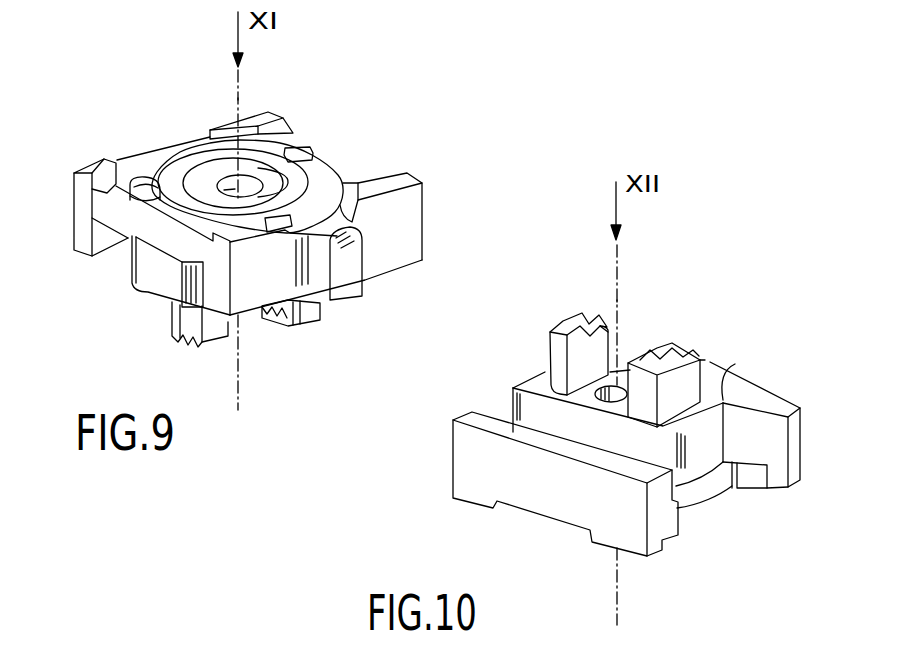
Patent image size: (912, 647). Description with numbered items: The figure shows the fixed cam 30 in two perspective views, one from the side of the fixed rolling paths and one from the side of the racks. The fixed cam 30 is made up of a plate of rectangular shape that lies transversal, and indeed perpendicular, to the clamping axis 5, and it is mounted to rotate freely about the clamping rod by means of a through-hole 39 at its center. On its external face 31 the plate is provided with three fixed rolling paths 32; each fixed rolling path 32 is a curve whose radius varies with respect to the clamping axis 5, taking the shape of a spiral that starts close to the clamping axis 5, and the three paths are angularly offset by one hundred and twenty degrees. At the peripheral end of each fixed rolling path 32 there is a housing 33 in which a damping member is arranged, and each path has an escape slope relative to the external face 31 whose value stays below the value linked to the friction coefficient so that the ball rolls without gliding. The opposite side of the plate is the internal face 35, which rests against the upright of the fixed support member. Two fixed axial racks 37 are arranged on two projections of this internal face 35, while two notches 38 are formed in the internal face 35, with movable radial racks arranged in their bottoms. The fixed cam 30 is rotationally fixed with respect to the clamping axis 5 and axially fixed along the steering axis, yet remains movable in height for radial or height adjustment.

In FIG. 9, the clamping axis 5 is at (237, 96).
In FIG. 10, the clamping axis 5 is at (620, 302).
In FIG. 9, the fixed cam 30 is at (130, 118).
In FIG. 10, the fixed cam 30 is at (745, 328).
In FIG. 9, the external face 31 is at (328, 167).
In FIG. 9, the fixed rolling path 32 is at (213, 153).
In FIG. 9, the housing 33 is at (300, 150).
In FIG. 9, the internal face 35 is at (391, 268).
In FIG. 10, the internal face 35 is at (773, 405).
In FIG. 9, the fixed axial rack 37 is at (190, 345).
In FIG. 10, the fixed axial rack 37 is at (575, 317).
In FIG. 10, the notch 38 is at (750, 451).
In FIG. 9, the through-hole 39 is at (228, 188).
In FIG. 10, the through-hole 39 is at (552, 372).